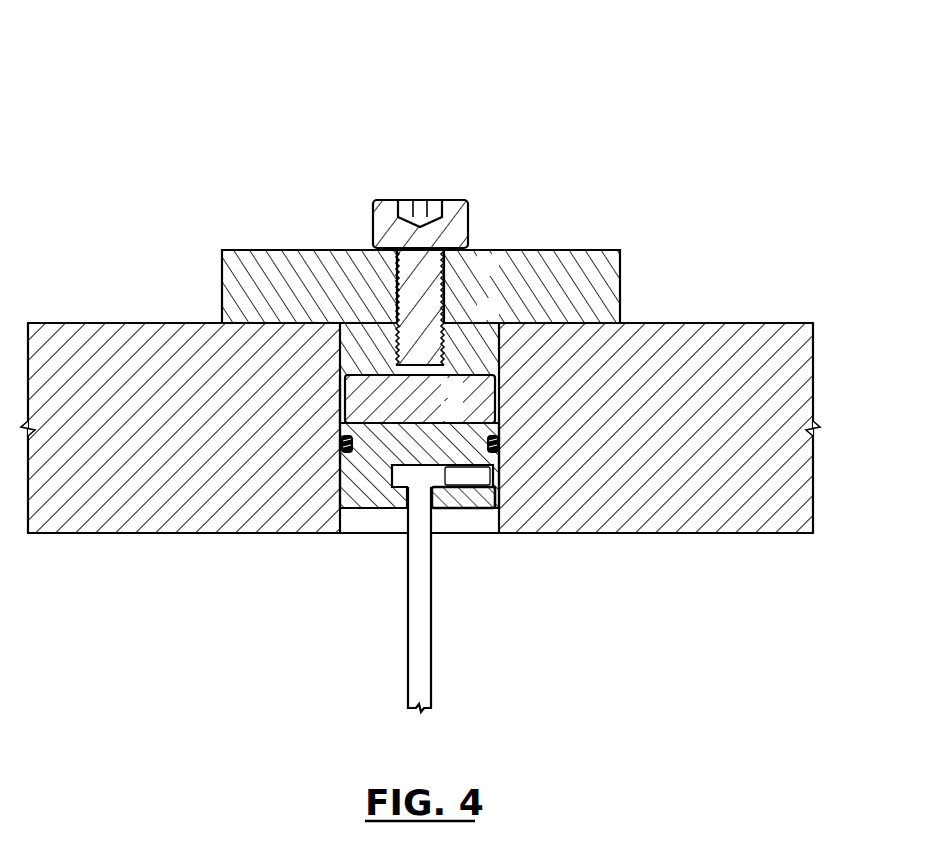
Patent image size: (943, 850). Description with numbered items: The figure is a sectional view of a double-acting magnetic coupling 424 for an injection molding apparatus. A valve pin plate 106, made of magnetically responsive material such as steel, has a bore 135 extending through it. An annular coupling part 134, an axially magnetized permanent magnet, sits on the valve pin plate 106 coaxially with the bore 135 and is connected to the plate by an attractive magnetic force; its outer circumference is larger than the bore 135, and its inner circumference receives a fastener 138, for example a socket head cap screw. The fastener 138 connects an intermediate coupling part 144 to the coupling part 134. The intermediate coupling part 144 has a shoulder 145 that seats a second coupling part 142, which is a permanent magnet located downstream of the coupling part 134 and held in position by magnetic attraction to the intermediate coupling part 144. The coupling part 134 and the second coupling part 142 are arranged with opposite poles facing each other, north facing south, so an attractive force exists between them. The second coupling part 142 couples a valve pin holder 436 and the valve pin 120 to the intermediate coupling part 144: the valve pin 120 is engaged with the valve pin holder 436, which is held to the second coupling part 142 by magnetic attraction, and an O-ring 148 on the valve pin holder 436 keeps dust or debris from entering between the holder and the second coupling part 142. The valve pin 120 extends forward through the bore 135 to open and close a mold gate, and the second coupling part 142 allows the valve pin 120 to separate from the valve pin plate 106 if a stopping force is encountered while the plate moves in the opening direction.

The double-acting magnetic coupling 424 is at (193, 166).
The valve pin plate 106 is at (789, 352).
The coupling part 134 is at (612, 275).
The fastener 138 is at (447, 230).
The intermediate coupling part 144 is at (367, 344).
The second coupling part 142 is at (481, 400).
The shoulder 145 is at (341, 392).
The O-ring 148 is at (500, 447).
The valve pin holder 436 is at (372, 490).
The bore 135 is at (345, 518).
The valve pin 120 is at (426, 617).